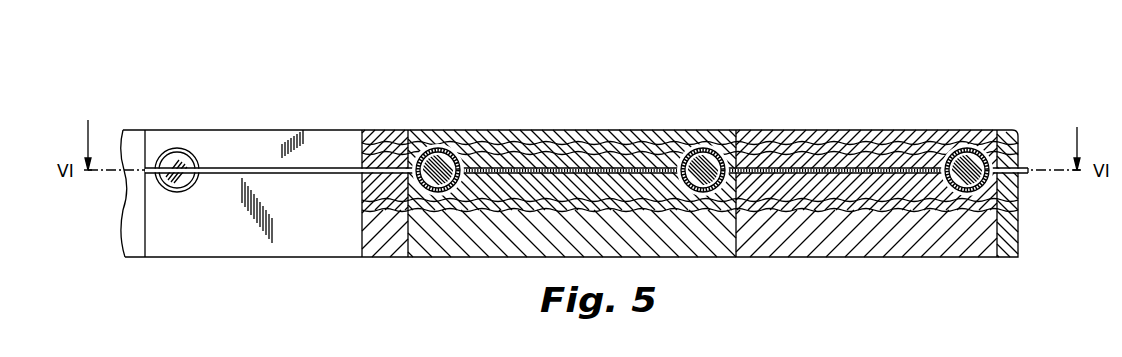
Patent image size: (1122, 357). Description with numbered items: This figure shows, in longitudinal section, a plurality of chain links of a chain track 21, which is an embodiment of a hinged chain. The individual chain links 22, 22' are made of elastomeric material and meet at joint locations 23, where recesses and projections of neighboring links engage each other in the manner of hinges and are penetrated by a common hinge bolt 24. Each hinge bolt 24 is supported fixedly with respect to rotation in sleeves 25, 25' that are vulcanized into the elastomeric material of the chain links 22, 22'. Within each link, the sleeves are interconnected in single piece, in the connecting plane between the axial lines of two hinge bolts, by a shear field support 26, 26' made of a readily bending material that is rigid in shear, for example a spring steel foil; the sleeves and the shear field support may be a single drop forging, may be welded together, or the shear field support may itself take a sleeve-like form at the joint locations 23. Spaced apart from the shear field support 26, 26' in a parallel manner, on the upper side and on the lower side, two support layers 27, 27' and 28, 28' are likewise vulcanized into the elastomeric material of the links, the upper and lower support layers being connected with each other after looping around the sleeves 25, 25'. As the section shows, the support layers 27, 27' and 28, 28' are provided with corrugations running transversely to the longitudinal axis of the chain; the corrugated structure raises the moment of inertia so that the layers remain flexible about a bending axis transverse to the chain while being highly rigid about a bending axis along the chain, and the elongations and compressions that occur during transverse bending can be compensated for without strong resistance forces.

The chain track 21 is at (1066, 96).
The chain link 22 is at (572, 114).
The chain link 22' is at (866, 114).
The joint location 23 is at (395, 104).
The hinge bolt 24 is at (474, 132).
The sleeve 25 is at (570, 142).
The sleeve 25' is at (965, 142).
The shear field support 26 is at (572, 228).
The shear field support 26' is at (866, 227).
The support layer 27 is at (554, 120).
The support layer 27' is at (882, 120).
The support layer 28 is at (554, 222).
The support layer 28' is at (882, 222).